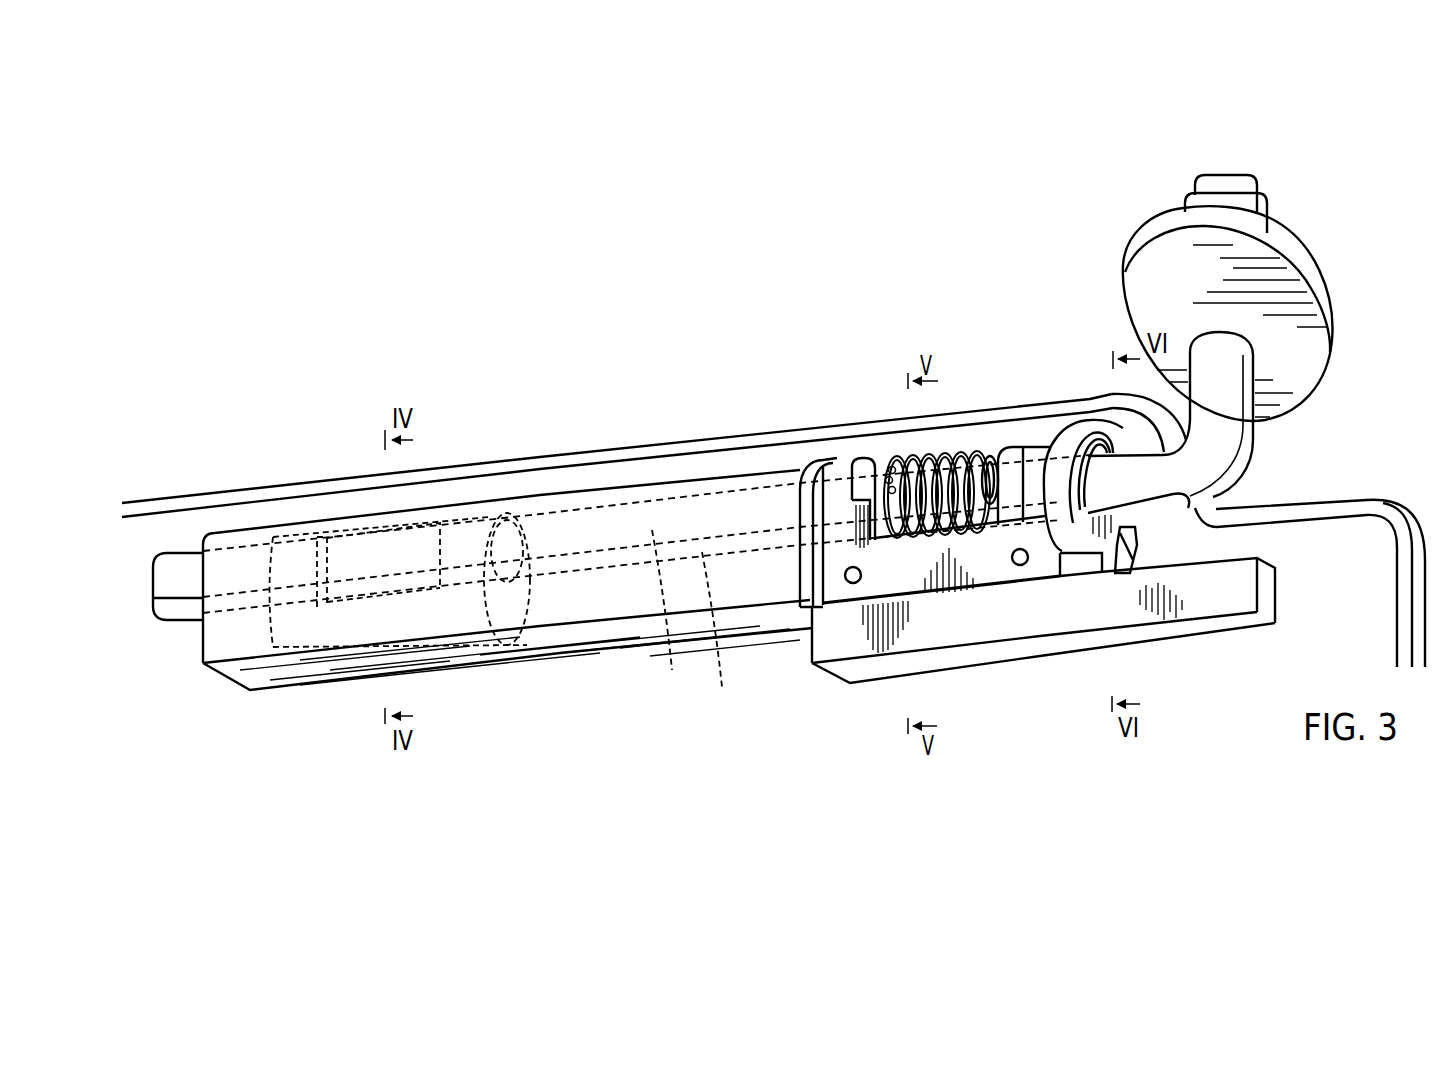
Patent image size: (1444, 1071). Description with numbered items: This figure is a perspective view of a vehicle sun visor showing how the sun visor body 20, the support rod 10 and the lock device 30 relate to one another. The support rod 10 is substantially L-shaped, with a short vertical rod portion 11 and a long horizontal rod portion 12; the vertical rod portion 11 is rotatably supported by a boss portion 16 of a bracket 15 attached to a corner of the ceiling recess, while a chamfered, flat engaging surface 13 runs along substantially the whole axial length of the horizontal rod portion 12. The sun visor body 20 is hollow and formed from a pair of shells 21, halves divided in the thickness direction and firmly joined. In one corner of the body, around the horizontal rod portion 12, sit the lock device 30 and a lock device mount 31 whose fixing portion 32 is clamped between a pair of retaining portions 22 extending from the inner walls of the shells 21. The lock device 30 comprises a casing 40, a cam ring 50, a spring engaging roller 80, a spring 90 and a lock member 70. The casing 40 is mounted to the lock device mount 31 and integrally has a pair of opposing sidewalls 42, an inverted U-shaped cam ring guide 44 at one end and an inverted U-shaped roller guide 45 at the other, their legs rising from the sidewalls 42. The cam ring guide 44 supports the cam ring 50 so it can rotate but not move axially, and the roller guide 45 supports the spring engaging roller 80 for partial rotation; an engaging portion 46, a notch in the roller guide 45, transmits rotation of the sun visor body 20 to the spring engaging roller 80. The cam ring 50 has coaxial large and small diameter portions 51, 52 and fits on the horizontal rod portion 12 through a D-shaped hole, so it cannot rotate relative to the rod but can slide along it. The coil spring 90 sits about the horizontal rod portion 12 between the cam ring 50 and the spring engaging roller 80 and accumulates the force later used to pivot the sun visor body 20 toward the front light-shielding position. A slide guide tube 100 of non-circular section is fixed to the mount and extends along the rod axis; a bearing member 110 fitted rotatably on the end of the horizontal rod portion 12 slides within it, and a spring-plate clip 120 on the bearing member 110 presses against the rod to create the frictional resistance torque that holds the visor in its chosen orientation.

The support rod 10 is at (1252, 458).
The vertical rod portion 11 is at (1225, 370).
The horizontal rod portion 12 is at (669, 618).
The engaging surface 13 is at (1180, 533).
The bracket 15 is at (1308, 355).
The boss portion 16 is at (1255, 213).
The sun visor body 20 is at (692, 432).
The shells 21 is at (1373, 506).
The retaining portions 22 is at (977, 665).
The lock device 30 is at (953, 446).
The lock device mount 31 is at (1019, 639).
The fixing portion 32 is at (886, 648).
The casing 40 is at (852, 462).
The sidewalls 42 is at (883, 587).
The cam ring guide 44 is at (1039, 451).
The roller guide 45 is at (835, 470).
The engaging portion 46 is at (858, 495).
The cam ring 50 is at (1073, 410).
The large diameter portion 51 is at (1082, 548).
The small diameter portion 52 is at (1007, 503).
The lock member 70 is at (1138, 529).
The spring engaging roller 80 is at (878, 457).
The spring 90 is at (978, 450).
The slide guide tube 100 is at (593, 632).
The bearing member 110 is at (303, 550).
The clip 120 is at (408, 550).